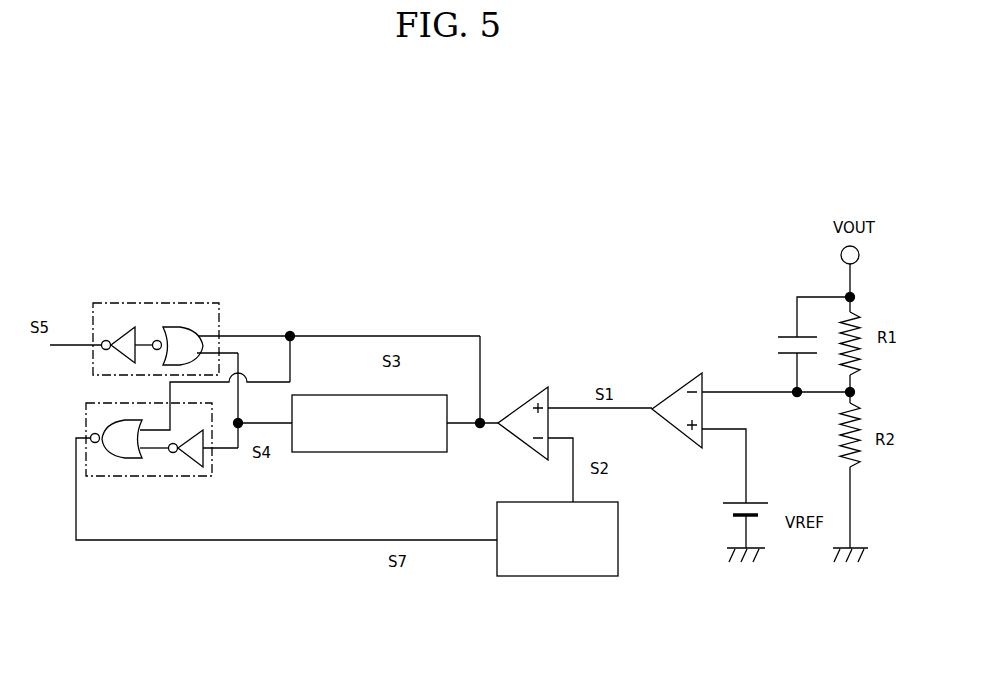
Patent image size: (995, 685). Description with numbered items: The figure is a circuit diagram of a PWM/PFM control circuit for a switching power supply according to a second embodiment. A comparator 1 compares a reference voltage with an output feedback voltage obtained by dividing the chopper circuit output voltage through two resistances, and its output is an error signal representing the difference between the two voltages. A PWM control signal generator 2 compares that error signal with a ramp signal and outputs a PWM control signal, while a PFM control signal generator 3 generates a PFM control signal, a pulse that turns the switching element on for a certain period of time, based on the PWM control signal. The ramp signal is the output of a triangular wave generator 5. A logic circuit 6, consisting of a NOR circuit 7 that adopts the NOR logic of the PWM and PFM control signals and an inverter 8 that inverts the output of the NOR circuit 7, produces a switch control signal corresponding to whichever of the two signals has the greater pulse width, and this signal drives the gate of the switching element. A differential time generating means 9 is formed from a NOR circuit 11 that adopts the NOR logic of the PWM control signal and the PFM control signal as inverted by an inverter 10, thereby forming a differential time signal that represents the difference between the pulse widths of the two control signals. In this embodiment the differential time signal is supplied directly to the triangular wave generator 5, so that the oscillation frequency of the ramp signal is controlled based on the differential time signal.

The comparator 1 is at (667, 400).
The PWM control signal generator 2 is at (520, 420).
The PFM control signal generator 3 is at (420, 443).
The triangular wave generator 5 is at (612, 577).
The logic circuit 6 is at (155, 303).
The NOR circuit 7 is at (190, 335).
The inverter 8 is at (122, 338).
The differential time generating means 9 is at (147, 477).
The inverter 10 is at (202, 467).
The NOR circuit 11 is at (117, 448).